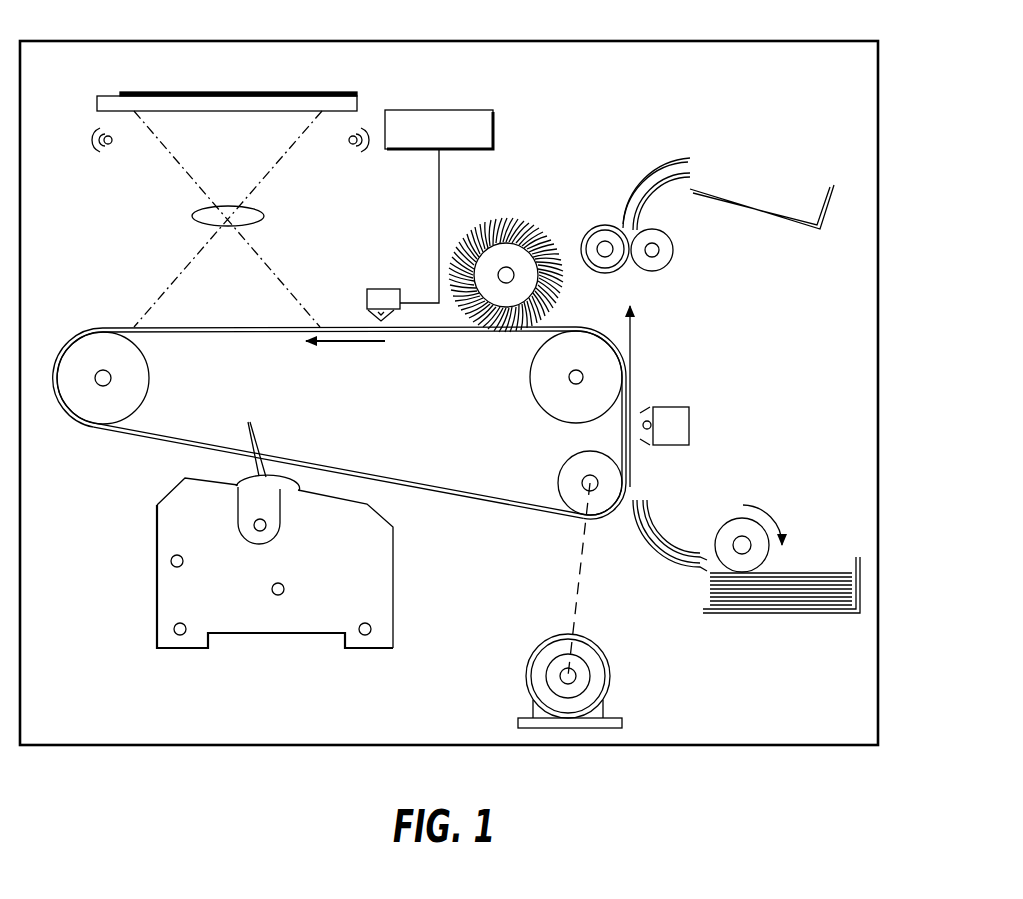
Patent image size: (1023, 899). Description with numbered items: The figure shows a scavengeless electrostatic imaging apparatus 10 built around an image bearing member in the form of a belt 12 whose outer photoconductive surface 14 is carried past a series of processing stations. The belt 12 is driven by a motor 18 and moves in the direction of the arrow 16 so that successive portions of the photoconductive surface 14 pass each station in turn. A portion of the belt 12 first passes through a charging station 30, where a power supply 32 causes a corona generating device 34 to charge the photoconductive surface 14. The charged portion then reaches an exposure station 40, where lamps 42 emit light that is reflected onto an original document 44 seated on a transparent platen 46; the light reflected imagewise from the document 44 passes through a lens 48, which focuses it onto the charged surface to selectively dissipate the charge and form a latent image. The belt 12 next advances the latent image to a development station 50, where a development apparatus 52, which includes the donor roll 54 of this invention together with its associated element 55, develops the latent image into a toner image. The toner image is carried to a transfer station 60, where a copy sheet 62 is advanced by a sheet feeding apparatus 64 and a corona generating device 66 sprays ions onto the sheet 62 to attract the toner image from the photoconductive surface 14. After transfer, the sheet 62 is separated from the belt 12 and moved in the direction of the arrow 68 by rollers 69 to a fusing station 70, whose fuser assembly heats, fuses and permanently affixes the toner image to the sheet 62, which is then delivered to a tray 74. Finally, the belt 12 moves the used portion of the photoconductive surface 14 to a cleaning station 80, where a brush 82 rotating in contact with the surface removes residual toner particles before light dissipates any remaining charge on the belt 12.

The scavengeless electrostatic imaging apparatus 10 is at (895, 310).
The belt 12 is at (339, 452).
The photoconductive surface 14 is at (518, 520).
The arrow 16 is at (341, 344).
The motor 18 is at (626, 672).
The charging station 30 is at (475, 188).
The power supply 32 is at (466, 110).
The corona generating device 34 is at (388, 276).
The exposure station 40 is at (215, 191).
The lamps 42 is at (102, 148).
The original document 44 is at (307, 95).
The transparent platen 46 is at (228, 107).
The lens 48 is at (258, 218).
The development station 50 is at (234, 524).
The development apparatus 52 is at (157, 632).
The donor roll 54 is at (290, 482).
The feed finger 55 is at (248, 436).
The transfer station 60 is at (718, 409).
The copy sheet 62 is at (797, 572).
The sheet feeding apparatus 64 is at (633, 388).
The corona generating device 66 is at (690, 426).
The arrow 68 is at (633, 348).
The rollers 69 is at (677, 280).
The fusing station 70 is at (655, 227).
The tray 74 is at (763, 207).
The cleaning station 80 is at (506, 244).
The brush 82 is at (498, 228).